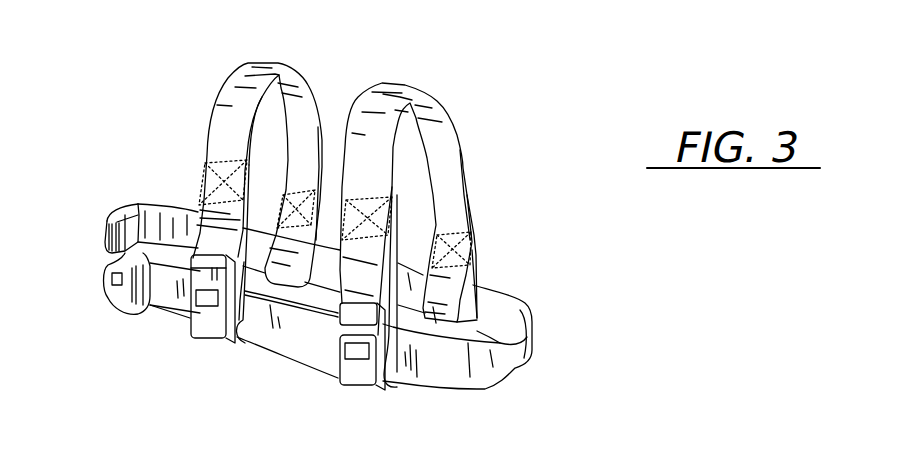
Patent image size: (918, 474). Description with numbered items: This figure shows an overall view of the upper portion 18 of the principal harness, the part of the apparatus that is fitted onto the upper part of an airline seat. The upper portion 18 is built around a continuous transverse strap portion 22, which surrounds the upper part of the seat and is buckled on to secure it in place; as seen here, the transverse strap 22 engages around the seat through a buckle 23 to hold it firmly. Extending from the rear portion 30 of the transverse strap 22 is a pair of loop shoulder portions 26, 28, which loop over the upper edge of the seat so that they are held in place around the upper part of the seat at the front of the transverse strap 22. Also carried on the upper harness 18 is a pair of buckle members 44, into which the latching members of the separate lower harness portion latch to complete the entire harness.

The upper portion 18 is at (468, 131).
The continuous transverse strap portion 22 is at (507, 355).
The buckle 23 is at (103, 247).
The loop shoulder portion 26 is at (232, 92).
The loop shoulder portion 28 is at (388, 123).
The rear portion 30 is at (487, 307).
The buckle members 44 is at (205, 280).